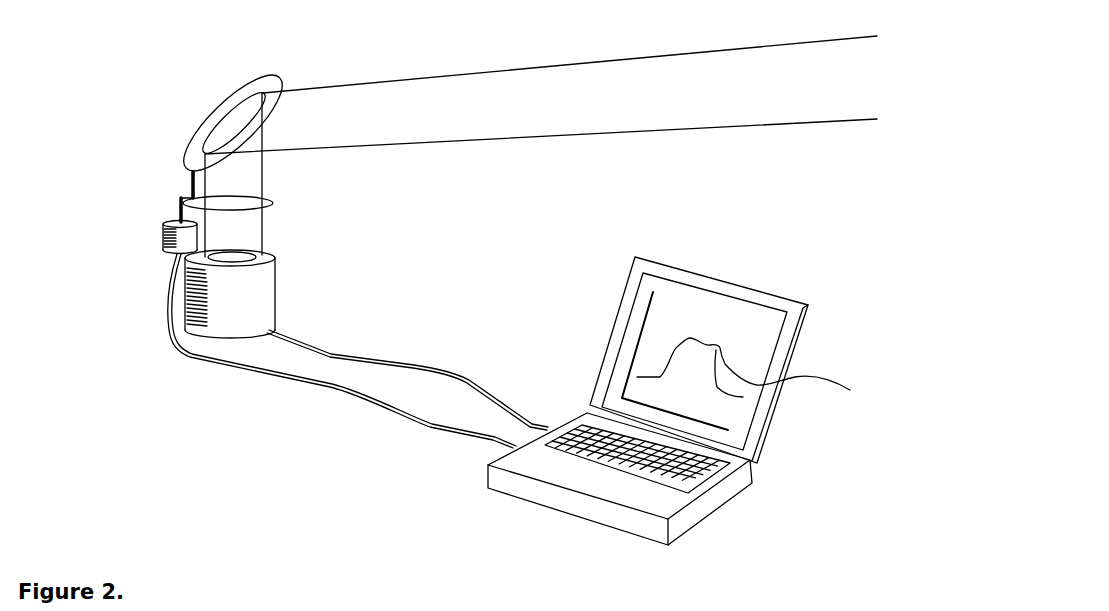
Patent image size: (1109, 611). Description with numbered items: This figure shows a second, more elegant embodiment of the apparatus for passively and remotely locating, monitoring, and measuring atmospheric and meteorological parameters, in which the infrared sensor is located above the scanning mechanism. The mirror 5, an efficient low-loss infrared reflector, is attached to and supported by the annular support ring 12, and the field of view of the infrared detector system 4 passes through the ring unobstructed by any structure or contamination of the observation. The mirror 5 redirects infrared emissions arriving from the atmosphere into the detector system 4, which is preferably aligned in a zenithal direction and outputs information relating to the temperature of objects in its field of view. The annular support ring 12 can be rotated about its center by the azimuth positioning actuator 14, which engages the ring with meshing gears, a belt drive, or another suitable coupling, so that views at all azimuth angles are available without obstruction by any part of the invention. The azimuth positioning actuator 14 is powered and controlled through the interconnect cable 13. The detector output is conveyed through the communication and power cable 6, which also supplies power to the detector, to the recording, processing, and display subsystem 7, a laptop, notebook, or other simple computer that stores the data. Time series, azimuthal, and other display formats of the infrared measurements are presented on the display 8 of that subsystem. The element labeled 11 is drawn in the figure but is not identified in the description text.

The infrared detector system 4 is at (252, 297).
The mirror 5 is at (237, 122).
The communication and power cable 6 is at (470, 383).
The recording, processing, and display subsystem 7 is at (702, 510).
The display of infrared sensor measurements 8 is at (850, 390).
The support rod 11 is at (192, 185).
The annular support ring 12 is at (273, 203).
The interconnect cable 13 is at (177, 343).
The azimuth positioning actuator 14 is at (162, 239).